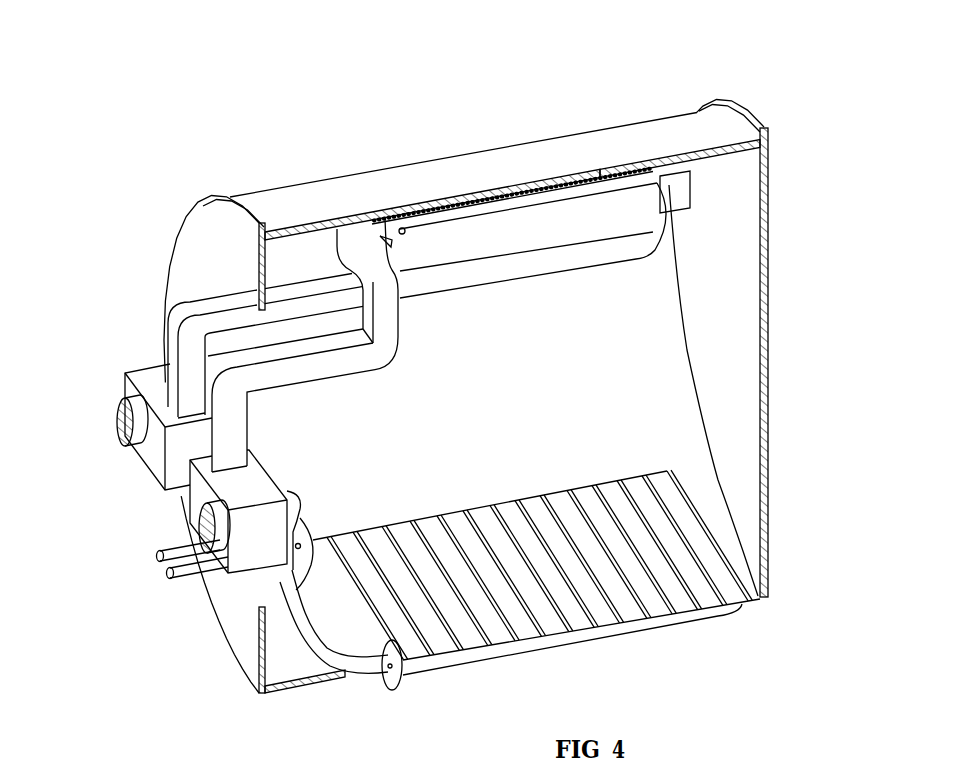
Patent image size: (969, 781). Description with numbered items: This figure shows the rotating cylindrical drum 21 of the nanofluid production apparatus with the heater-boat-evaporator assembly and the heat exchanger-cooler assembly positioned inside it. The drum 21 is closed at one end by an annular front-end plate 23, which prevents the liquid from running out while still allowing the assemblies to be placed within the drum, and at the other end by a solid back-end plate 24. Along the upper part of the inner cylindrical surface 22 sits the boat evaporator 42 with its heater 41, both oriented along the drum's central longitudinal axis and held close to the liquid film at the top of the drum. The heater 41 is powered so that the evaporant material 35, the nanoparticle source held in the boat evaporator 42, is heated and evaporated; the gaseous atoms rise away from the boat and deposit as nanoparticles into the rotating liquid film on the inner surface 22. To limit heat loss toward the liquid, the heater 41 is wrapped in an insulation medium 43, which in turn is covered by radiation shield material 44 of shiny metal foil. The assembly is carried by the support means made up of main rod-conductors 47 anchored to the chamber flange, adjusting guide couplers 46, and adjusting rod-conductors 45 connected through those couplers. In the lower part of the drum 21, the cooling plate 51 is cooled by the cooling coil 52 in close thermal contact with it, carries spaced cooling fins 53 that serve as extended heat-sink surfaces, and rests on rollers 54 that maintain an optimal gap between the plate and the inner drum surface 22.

The cylindrical drum 21 is at (731, 173).
The inner cylindrical surface 22 is at (706, 160).
The annular front-end plate 23 is at (241, 406).
The back-end plate 24 is at (765, 349).
The evaporant material 35 is at (499, 106).
The heater 41 is at (534, 123).
The boat evaporator 42 is at (512, 129).
The insulation medium 43 is at (432, 144).
The radiation shield material 44 is at (523, 179).
The adjusting rod-conductor 45 is at (220, 345).
The adjusting guide coupler 46 is at (127, 396).
The main rod-conductor 47 is at (97, 411).
The cooling plate 51 is at (539, 581).
The cooling coil 52 is at (337, 664).
The cooling fins 53 is at (536, 593).
The rollers 54 is at (432, 689).